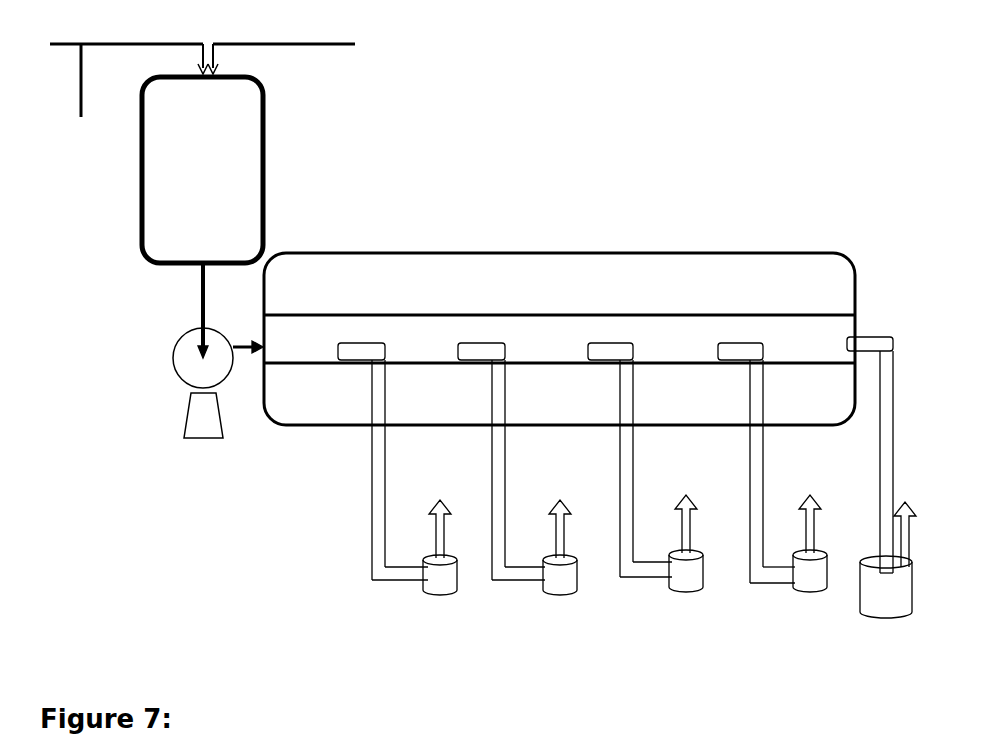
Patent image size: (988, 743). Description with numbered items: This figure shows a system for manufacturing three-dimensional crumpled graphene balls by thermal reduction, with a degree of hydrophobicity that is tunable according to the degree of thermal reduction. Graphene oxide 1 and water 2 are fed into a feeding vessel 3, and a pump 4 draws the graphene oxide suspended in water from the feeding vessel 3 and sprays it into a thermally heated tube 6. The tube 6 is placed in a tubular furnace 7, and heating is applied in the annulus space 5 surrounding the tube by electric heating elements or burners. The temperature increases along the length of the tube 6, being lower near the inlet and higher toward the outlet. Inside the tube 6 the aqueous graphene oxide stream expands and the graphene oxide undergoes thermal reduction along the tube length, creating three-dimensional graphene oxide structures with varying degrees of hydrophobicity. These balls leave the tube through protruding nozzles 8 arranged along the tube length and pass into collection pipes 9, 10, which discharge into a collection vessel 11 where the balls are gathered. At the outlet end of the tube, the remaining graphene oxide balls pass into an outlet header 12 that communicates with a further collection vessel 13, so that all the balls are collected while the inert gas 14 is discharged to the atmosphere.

The graphene oxide 1 is at (85, 110).
The water 2 is at (342, 45).
The feeding vessel 3 is at (165, 170).
The pump 4 is at (183, 372).
The annulus space 5 is at (438, 267).
The thermally heated tube 6 is at (543, 330).
The tubular furnace 7 is at (277, 425).
The protruding nozzles 8 is at (348, 360).
The collection pipe 9 is at (375, 557).
The collection pipe 10 is at (402, 582).
The collection vessel 11 is at (438, 590).
The outlet header 12 is at (870, 337).
The collection vessel 13 is at (860, 567).
The inert gas 14 is at (909, 520).